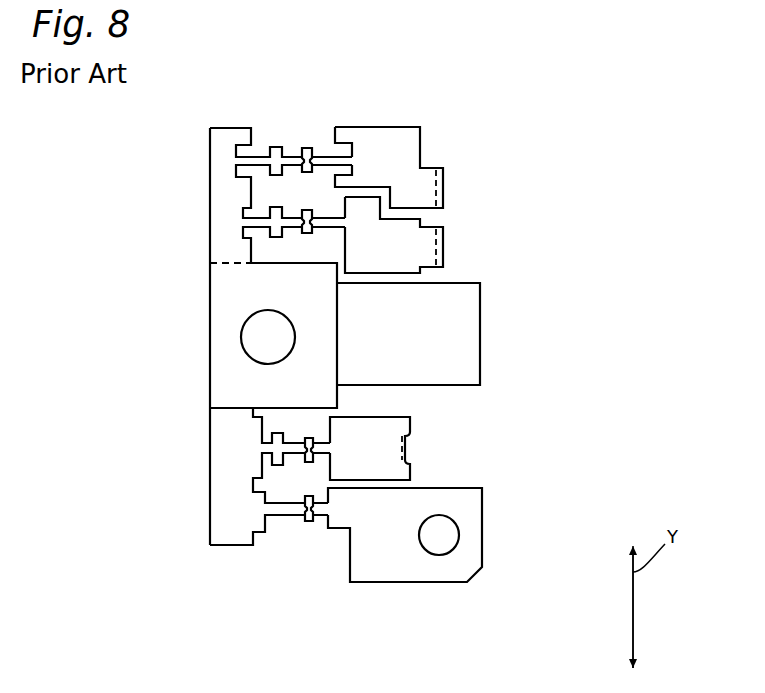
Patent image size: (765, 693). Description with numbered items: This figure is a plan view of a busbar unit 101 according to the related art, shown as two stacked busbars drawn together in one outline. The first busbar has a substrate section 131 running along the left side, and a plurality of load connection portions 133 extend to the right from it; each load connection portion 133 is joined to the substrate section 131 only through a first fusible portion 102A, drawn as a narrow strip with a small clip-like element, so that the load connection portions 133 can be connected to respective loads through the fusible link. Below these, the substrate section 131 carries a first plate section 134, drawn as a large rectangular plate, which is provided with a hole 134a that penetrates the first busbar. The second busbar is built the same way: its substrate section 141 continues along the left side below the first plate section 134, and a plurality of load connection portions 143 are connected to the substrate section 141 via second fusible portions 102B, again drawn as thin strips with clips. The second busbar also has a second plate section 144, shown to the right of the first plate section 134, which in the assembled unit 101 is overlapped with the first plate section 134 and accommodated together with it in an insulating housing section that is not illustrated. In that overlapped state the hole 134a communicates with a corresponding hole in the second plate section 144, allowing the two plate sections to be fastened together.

The busbar unit 101 is at (594, 191).
The substrate section 131 is at (222, 142).
The first fusible portion 102A is at (294, 151).
The load connection portion 133 is at (410, 150).
The first plate section 134 is at (226, 335).
The hole 134a is at (243, 329).
The second plate section 144 is at (458, 322).
The substrate section 141 is at (223, 441).
The load connection portion 143 is at (383, 413).
The second fusible portion 102B is at (296, 457).